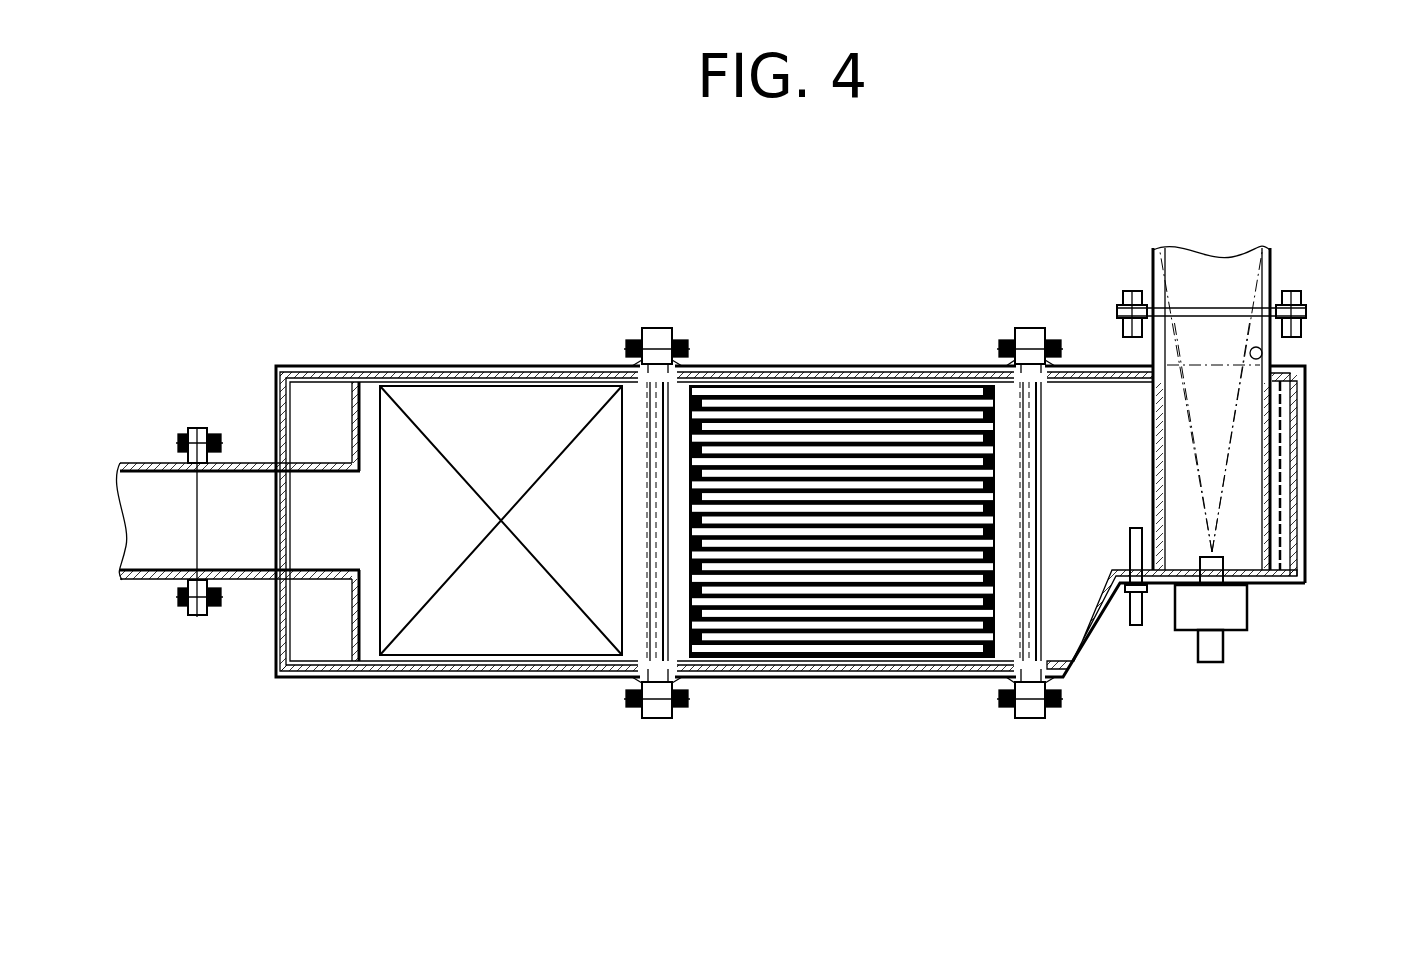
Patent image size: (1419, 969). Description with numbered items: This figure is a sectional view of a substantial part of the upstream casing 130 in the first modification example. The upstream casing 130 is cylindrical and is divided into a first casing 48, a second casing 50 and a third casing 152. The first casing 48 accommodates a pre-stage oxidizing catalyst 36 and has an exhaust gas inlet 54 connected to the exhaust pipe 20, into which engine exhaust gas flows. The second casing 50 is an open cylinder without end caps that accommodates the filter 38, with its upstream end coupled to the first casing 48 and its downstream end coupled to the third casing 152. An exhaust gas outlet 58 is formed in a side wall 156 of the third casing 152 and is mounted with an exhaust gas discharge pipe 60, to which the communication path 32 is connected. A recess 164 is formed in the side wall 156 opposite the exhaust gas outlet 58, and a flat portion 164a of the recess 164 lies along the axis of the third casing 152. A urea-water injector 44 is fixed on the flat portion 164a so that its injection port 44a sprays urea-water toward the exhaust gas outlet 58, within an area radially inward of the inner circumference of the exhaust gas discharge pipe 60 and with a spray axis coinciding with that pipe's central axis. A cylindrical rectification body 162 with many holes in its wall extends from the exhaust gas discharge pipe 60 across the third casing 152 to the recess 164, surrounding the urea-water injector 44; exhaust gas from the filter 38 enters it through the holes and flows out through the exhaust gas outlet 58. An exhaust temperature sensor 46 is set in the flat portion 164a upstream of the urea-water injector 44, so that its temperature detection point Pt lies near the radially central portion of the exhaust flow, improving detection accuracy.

The upstream casing 130 is at (836, 264).
The exhaust pipe 20 is at (141, 486).
The exhaust gas inlet 54 is at (249, 462).
The first casing 48 is at (335, 366).
The pre-stage oxidizing catalyst 36 is at (508, 400).
The second casing 50 is at (770, 380).
The filter 38 is at (884, 398).
The side wall 156 is at (1087, 364).
The third casing 152 is at (1301, 529).
The communication path 32 is at (1272, 267).
The exhaust gas discharge pipe 60 is at (1147, 348).
The exhaust gas outlet 58 is at (1262, 352).
The rectification body 162 is at (1270, 454).
The recess 164 is at (1267, 619).
The flat portion 164a is at (1282, 586).
The injection port 44a is at (1223, 553).
The urea-water injector 44 is at (1236, 624).
The exhaust temperature sensor 46 is at (1145, 614).
The temperature detection point Pt is at (1128, 536).